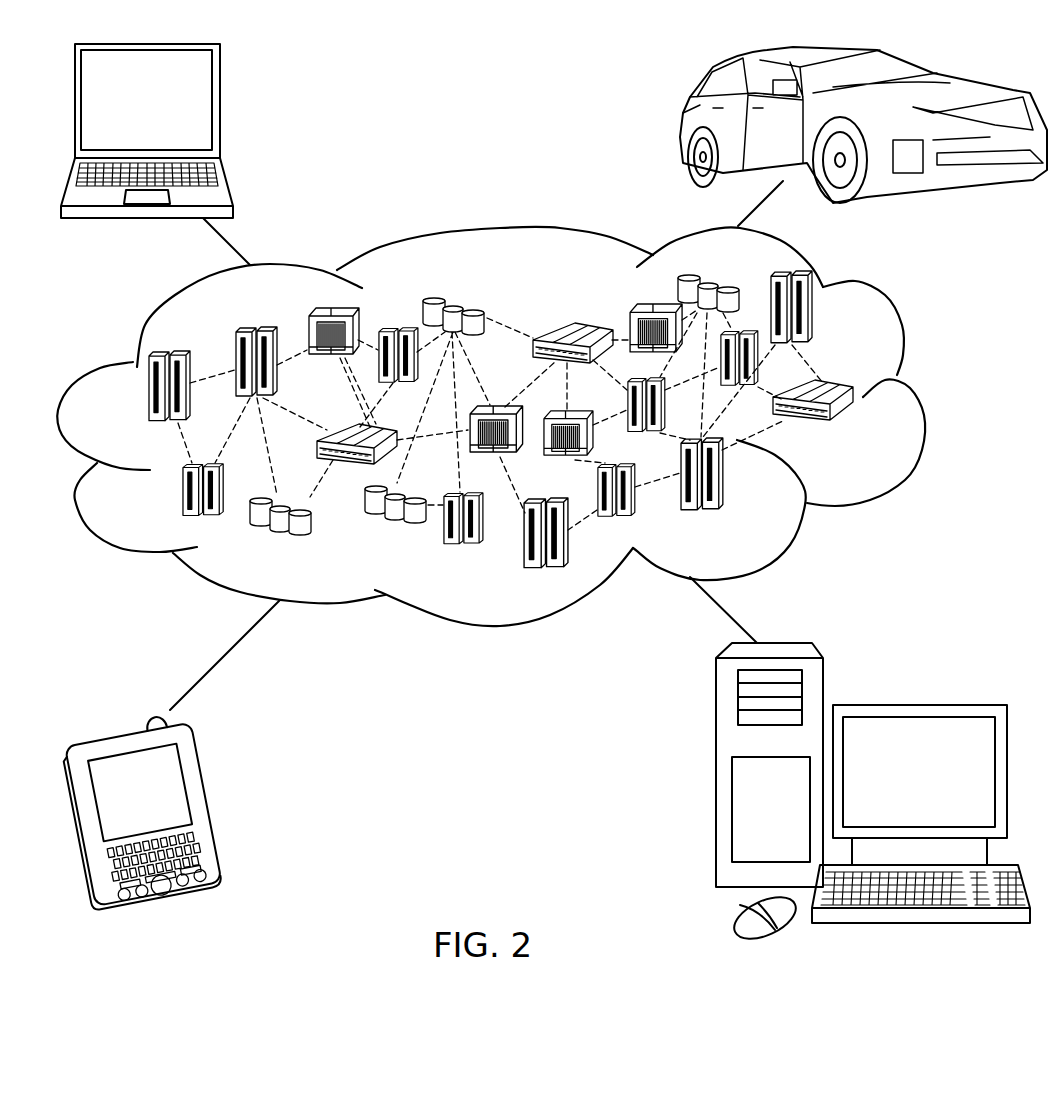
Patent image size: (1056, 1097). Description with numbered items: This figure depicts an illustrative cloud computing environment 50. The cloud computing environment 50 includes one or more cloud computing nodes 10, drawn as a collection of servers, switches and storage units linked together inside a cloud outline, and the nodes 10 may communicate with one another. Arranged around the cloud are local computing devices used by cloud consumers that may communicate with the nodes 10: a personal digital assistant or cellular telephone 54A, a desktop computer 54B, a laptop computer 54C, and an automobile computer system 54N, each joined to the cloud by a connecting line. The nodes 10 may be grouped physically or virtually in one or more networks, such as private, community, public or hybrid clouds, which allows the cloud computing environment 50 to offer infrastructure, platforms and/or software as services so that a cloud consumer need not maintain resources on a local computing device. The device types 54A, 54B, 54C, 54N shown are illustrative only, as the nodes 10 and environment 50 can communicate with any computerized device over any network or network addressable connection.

The cloud computing node 10 is at (857, 430).
The cloud computing environment 50 is at (917, 397).
The personal digital assistant or cellular telephone 54A is at (208, 803).
The desktop computer 54B is at (917, 703).
The laptop computer 54C is at (219, 110).
The automobile computer system 54N is at (683, 127).